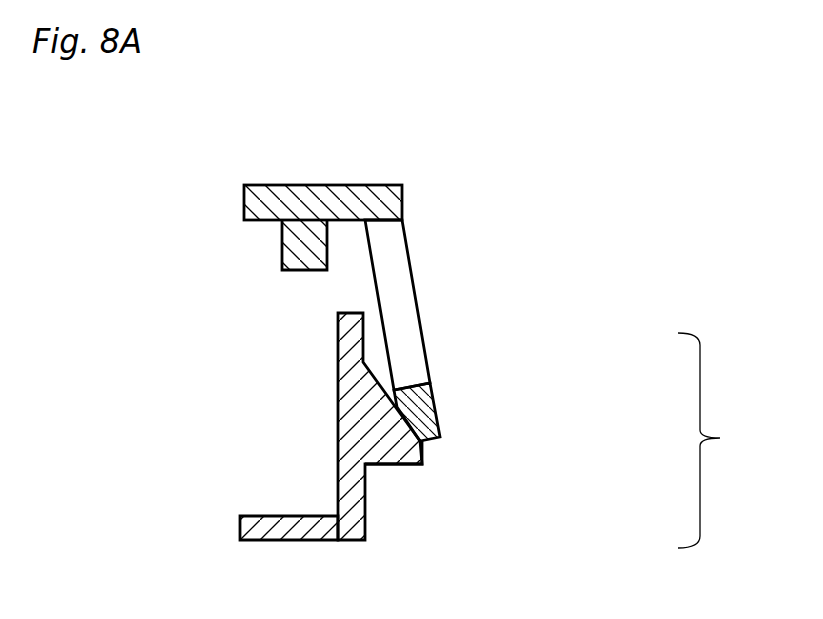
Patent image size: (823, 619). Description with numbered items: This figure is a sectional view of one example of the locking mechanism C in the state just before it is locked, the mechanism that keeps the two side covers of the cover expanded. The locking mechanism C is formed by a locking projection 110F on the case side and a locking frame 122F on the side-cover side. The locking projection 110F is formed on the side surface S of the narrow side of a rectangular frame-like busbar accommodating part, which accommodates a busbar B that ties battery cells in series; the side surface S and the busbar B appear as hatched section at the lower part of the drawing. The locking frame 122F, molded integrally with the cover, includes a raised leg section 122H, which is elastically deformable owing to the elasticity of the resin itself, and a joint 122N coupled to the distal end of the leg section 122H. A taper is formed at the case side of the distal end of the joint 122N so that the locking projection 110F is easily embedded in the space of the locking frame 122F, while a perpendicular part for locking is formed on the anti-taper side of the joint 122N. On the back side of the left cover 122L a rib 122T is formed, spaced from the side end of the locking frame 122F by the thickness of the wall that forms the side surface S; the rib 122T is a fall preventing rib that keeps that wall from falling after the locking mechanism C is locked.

The left cover 122L is at (356, 184).
The rib 122T is at (296, 270).
The leg section 122H is at (415, 297).
The joint 122N is at (437, 420).
The locking frame 122F is at (519, 330).
The locking projection 110F is at (434, 476).
The busbar B is at (283, 540).
The side surface S is at (373, 517).
The locking mechanism C is at (711, 440).